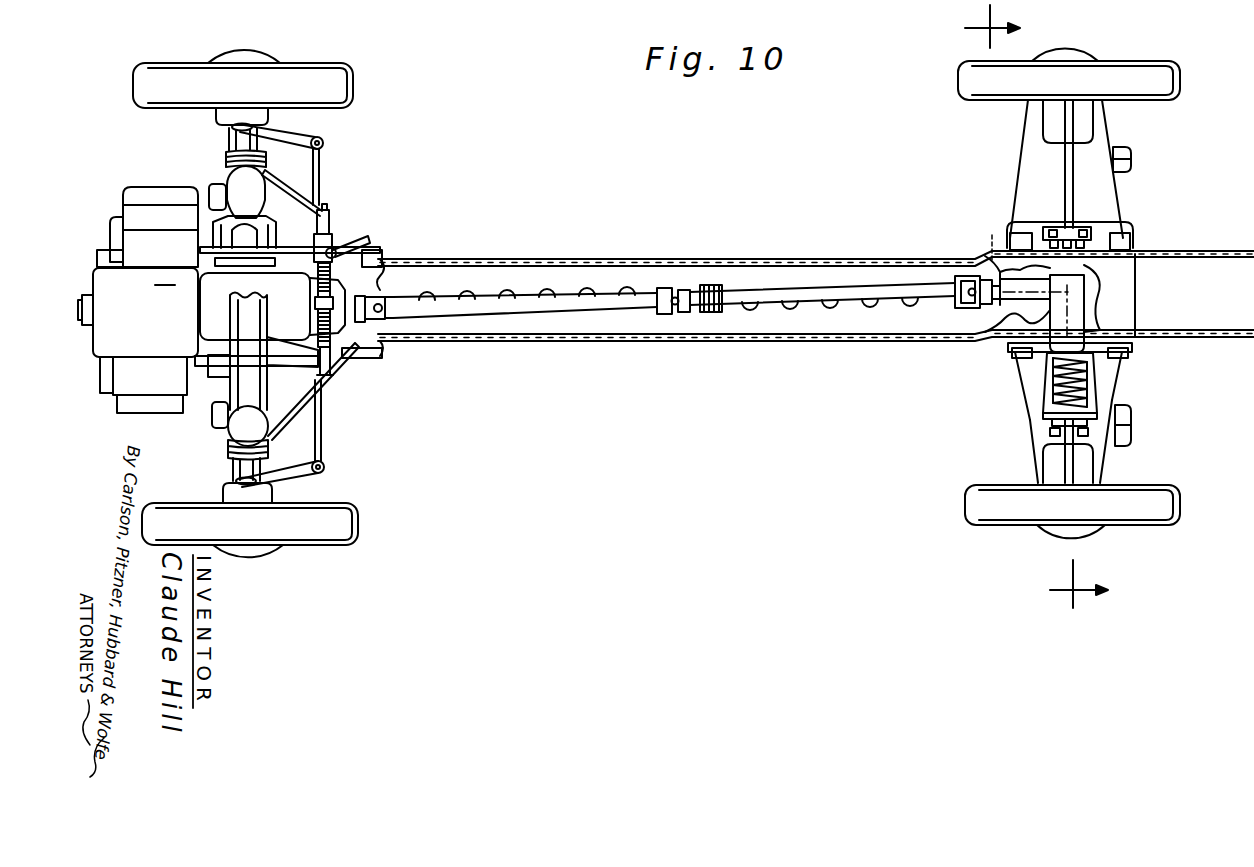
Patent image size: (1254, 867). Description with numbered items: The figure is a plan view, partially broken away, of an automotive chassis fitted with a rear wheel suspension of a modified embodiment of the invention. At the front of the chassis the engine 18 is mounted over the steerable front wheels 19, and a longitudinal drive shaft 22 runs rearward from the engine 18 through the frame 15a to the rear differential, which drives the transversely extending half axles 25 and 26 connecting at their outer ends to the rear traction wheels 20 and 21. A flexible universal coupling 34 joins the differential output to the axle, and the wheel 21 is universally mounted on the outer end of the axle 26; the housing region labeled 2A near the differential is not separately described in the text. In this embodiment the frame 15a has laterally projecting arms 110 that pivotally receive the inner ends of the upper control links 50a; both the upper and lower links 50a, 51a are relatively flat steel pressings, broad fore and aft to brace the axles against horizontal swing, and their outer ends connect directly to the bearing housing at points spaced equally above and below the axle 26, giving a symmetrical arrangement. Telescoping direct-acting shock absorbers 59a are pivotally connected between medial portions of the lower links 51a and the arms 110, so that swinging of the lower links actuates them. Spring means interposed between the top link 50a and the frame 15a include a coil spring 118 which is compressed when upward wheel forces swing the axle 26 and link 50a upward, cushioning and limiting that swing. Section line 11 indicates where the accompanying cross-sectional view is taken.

The section line 11- 11 is at (1051, 306).
The frame 15a is at (632, 259).
The engine 18 is at (153, 184).
The steerable front wheels 19 is at (320, 72).
The rear traction wheel 20 is at (967, 512).
The rear traction wheel 21 is at (966, 94).
The longitudinal drive shaft 22 is at (768, 304).
The half axle 25 is at (1068, 198).
The half axle 26 is at (1068, 470).
The rear axle housing 2A is at (1040, 308).
The flexible universal coupling 34 is at (1038, 234).
The upper control link 50a is at (1036, 433).
The lower control link 51a is at (1118, 209).
The telescoping direct-acting shock absorber 59a is at (1133, 165).
The laterally projecting arm 110 is at (1047, 389).
The coil spring 118 is at (1092, 381).